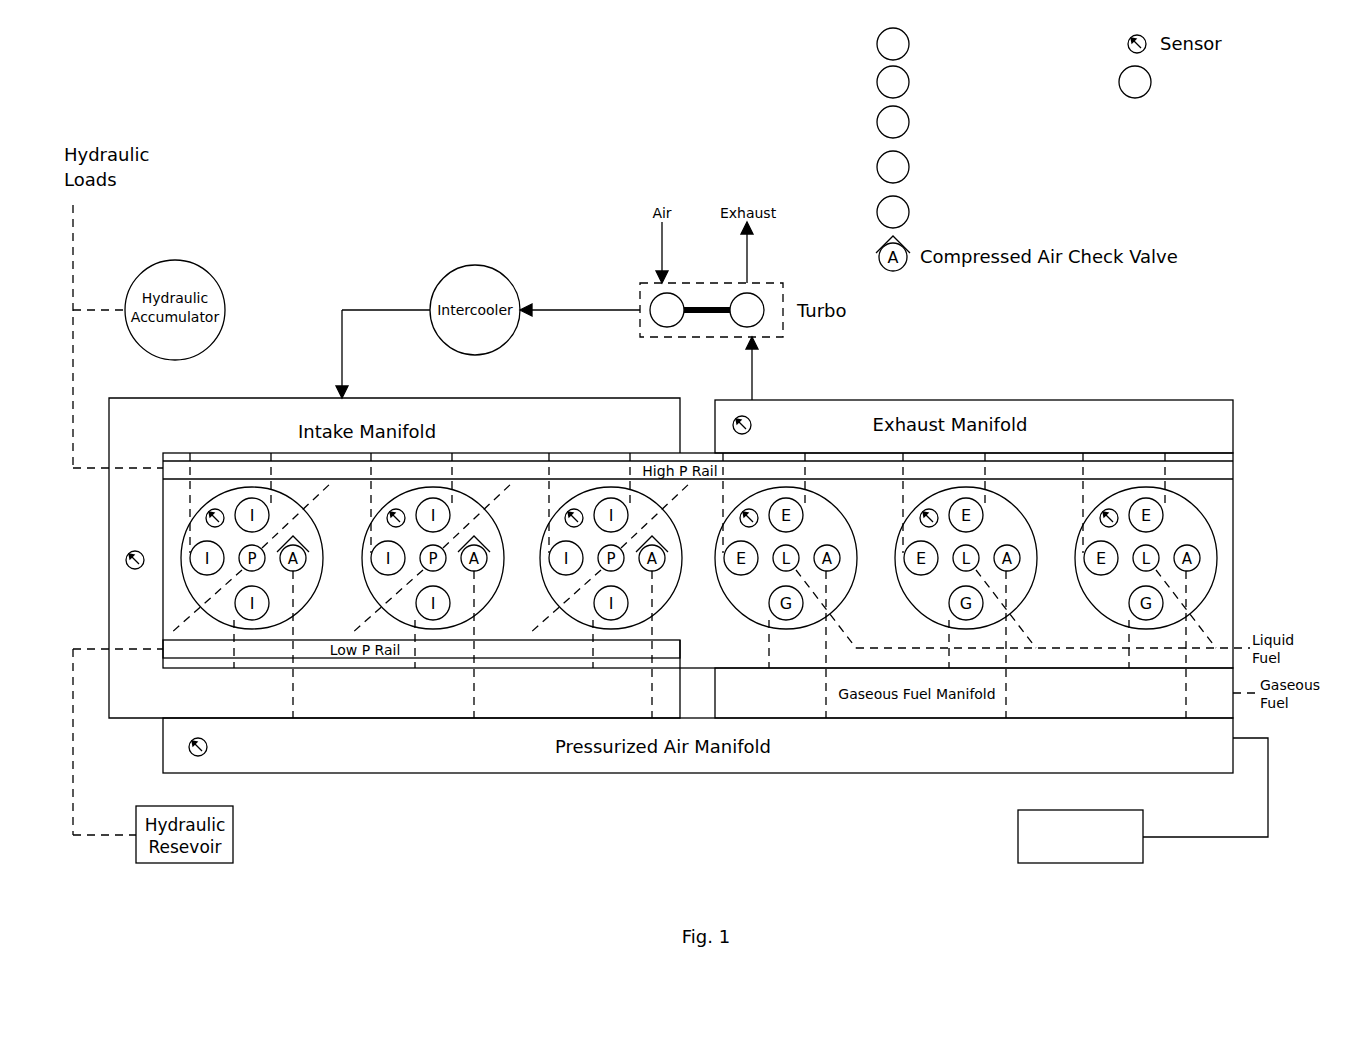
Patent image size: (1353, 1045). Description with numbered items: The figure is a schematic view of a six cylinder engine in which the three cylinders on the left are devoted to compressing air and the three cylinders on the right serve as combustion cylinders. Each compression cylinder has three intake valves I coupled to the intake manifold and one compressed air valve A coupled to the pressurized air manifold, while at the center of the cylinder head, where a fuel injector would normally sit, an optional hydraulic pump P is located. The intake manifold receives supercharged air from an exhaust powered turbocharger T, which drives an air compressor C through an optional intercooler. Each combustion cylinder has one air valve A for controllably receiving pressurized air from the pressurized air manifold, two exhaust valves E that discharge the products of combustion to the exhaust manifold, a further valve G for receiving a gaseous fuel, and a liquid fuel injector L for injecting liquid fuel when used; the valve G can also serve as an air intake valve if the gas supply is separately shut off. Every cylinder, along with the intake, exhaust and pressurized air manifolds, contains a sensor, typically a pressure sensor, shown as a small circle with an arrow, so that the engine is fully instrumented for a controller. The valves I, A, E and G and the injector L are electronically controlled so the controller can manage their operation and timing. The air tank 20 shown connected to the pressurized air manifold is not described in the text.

The air tank 20 is at (1018, 832).
The hydraulic pump P is at (969, 44).
The liquid fuel injector L is at (984, 82).
The exhaust valve E is at (962, 122).
The intake valve I is at (953, 167).
The compressed air valve A is at (997, 212).
The gaseous fuel valve G is at (1226, 82).
The air compressor C is at (667, 310).
The turbocharger T is at (747, 310).